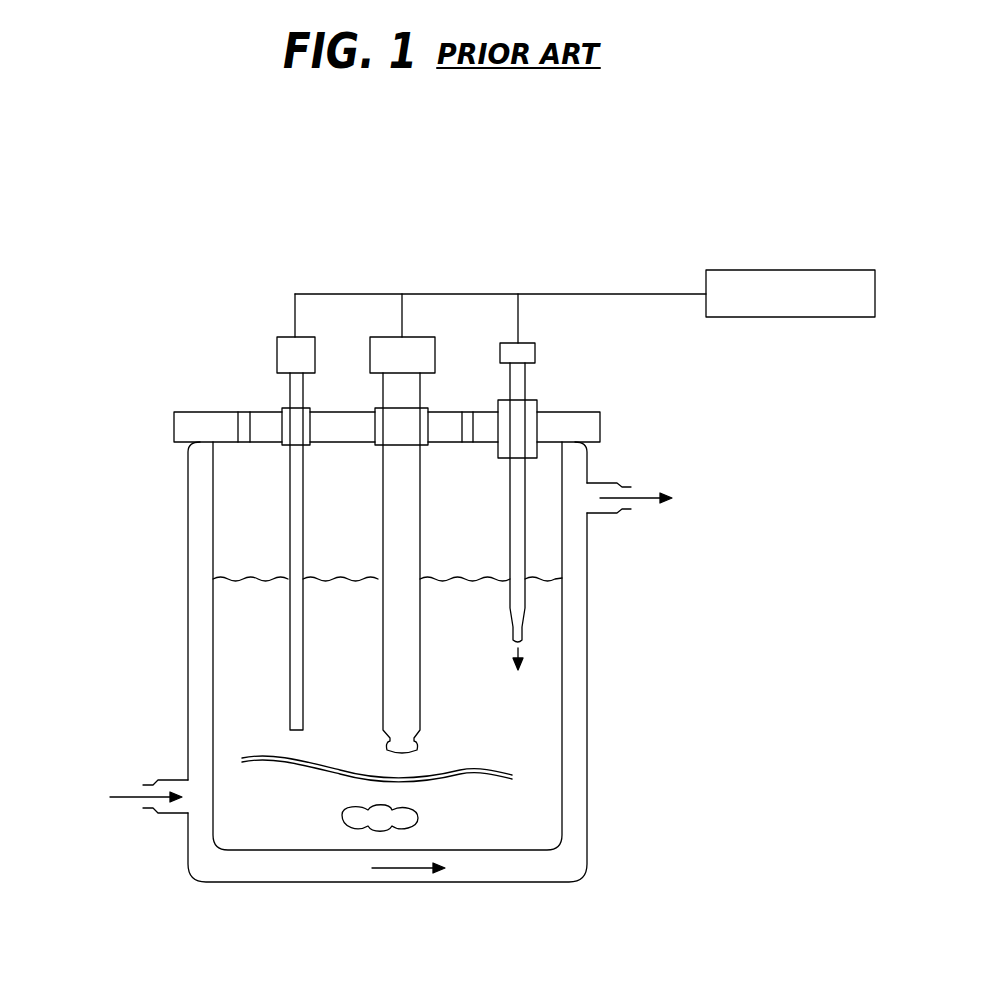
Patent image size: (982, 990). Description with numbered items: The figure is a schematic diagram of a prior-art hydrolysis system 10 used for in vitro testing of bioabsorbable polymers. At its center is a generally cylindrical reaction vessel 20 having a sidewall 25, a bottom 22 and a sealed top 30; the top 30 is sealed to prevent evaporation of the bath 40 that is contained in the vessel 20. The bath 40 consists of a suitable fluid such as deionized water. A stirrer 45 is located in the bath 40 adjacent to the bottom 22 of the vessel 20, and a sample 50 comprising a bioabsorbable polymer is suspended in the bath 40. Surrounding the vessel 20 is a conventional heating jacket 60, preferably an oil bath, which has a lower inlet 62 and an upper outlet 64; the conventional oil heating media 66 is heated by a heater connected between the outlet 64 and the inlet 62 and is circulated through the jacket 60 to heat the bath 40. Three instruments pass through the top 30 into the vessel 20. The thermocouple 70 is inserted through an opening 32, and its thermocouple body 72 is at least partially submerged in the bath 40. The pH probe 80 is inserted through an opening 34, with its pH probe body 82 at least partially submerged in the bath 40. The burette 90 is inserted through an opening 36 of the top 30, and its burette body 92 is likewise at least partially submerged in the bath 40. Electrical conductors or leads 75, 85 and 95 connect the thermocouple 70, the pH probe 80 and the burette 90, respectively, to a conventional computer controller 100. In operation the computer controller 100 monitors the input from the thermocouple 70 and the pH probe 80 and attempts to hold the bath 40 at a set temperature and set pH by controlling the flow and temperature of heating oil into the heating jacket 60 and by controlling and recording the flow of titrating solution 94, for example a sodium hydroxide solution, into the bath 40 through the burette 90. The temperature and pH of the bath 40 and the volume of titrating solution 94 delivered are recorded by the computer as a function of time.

The hydrolysis system 10 is at (753, 440).
The reaction vessel 20 is at (225, 507).
The bottom 22 is at (507, 850).
The sidewall 25 is at (213, 528).
The sealed top 30 is at (602, 420).
The opening 32 is at (288, 408).
The opening 34 is at (382, 407).
The opening 36 is at (545, 412).
The bath 40 is at (258, 702).
The stirrer 45 is at (362, 822).
The sample 50 is at (332, 770).
The heating jacket 60 is at (588, 598).
The lower inlet 62 is at (173, 778).
The upper outlet 64 is at (620, 485).
The oil heating media 66 is at (127, 800).
The thermocouple 70 is at (293, 518).
The thermocouple body 72 is at (293, 607).
The lead 75 is at (293, 318).
The pH probe 80 is at (420, 688).
The pH probe body 82 is at (405, 673).
The lead 85 is at (403, 317).
The burette 90 is at (520, 548).
The burette body 92 is at (520, 602).
The titrating solution 94 is at (520, 658).
The lead 95 is at (518, 318).
The computer controller 100 is at (808, 270).